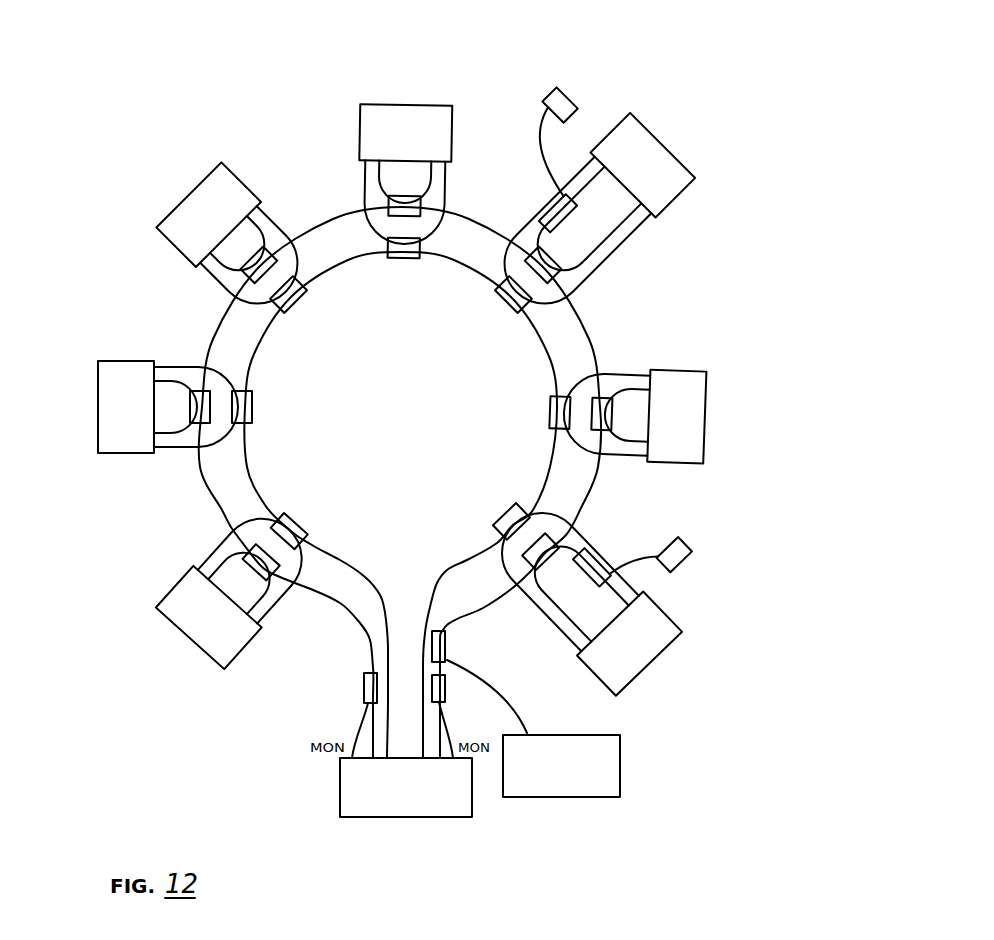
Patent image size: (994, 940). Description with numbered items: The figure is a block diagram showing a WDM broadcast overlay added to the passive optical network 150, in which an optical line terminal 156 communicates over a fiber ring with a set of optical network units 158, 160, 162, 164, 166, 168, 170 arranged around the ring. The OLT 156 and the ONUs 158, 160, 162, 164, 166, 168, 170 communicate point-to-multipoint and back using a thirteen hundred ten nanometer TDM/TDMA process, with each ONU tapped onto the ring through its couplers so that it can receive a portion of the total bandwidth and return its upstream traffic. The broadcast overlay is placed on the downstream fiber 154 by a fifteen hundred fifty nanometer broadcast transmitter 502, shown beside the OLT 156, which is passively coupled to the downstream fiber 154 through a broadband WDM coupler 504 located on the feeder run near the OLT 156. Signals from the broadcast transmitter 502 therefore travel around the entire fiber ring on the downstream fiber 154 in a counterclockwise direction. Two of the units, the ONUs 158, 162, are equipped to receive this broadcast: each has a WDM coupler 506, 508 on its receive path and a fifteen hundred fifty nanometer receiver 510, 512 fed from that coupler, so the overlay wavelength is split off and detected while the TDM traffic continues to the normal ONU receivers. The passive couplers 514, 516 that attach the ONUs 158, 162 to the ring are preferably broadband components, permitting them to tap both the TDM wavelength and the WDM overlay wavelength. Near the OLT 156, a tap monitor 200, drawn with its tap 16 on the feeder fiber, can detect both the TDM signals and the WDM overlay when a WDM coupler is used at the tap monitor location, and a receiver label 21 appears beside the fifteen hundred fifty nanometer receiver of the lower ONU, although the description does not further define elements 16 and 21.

The passive optical network 150 is at (172, 116).
The downstream fiber 154 is at (502, 595).
The optical line terminal 156 is at (358, 818).
The optical network unit 158 is at (673, 642).
The optical network unit 160 is at (705, 400).
The optical network unit 162 is at (660, 147).
The optical network unit 164 is at (403, 105).
The optical network unit 166 is at (185, 187).
The optical network unit 168 is at (95, 410).
The optical network unit 170 is at (157, 584).
The tap monitor 200 is at (364, 680).
The tap 16 is at (318, 697).
The 1550 nm receiver 21 is at (747, 594).
The 1550 nm broadcast transmitter 502 is at (552, 798).
The broadband WDM coupler 504 is at (447, 645).
The WDM coupler 506 is at (590, 552).
The WDM coupler 508 is at (574, 214).
The 1550 nm receiver 510 is at (694, 552).
The 1550 nm receiver 512 is at (555, 90).
The passive coupler 514 is at (548, 556).
The passive coupler 516 is at (530, 295).